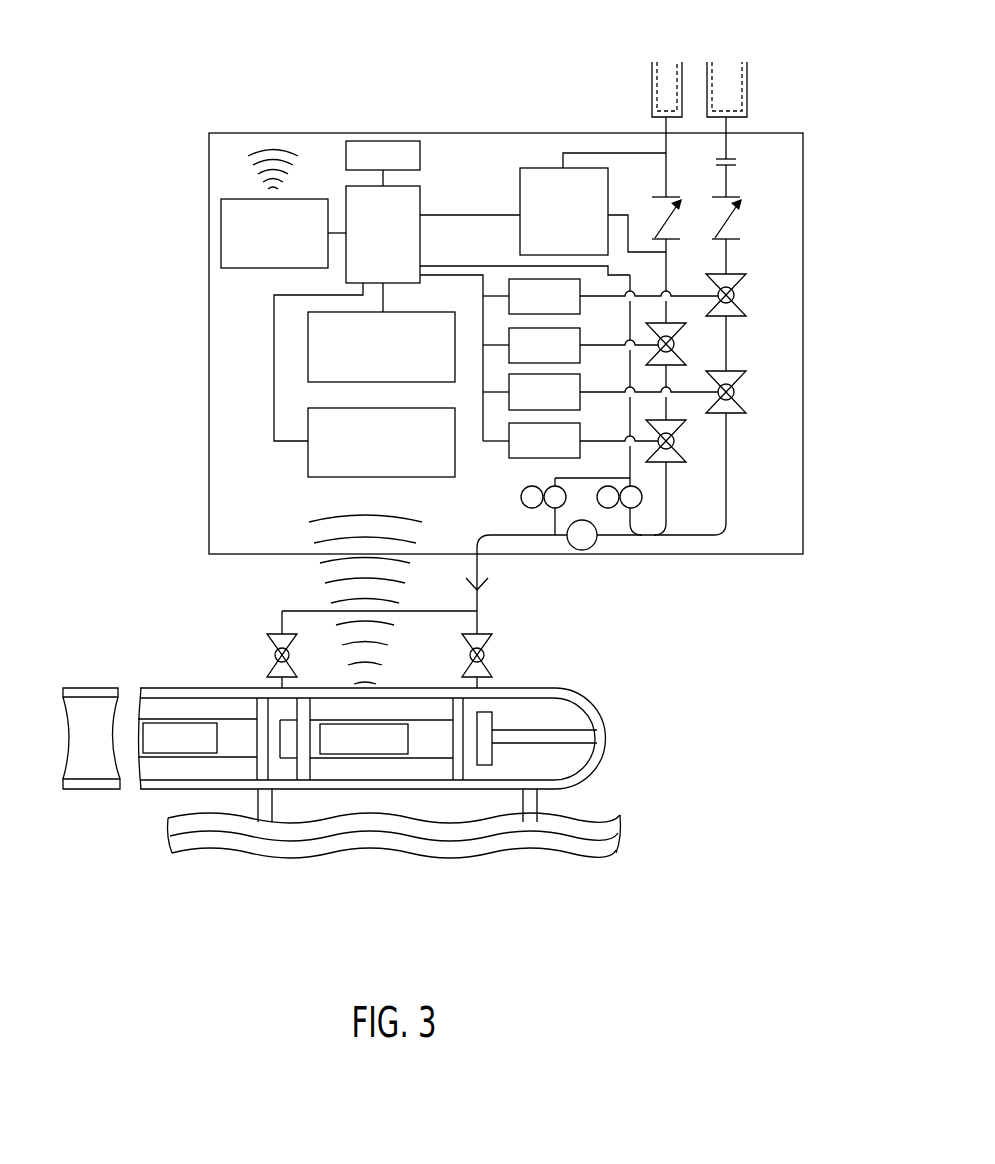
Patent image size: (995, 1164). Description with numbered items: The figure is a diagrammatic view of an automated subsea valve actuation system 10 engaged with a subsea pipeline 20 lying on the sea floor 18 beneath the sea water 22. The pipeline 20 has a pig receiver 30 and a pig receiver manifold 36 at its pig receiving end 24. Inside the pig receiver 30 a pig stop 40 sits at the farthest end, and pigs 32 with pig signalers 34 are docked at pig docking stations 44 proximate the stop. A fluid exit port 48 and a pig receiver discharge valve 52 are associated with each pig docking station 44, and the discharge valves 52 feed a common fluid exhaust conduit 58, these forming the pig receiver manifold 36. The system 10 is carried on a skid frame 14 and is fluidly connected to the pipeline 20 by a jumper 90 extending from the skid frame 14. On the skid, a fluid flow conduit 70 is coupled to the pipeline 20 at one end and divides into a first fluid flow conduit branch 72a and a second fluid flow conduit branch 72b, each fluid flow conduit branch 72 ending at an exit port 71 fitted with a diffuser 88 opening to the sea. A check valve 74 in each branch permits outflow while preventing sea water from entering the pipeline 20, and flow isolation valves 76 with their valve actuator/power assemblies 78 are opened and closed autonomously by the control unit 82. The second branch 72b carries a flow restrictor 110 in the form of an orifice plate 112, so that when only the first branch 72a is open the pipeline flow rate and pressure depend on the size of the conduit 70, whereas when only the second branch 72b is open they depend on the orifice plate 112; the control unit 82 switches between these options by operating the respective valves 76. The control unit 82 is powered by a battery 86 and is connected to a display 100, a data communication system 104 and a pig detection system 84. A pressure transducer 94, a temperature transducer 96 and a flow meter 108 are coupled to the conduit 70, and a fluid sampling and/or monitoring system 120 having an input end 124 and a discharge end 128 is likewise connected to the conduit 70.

The automated subsea valve actuation system 10 is at (289, 90).
The skid frame 14 is at (206, 319).
The sea floor 18 is at (593, 815).
The subsea pipeline 20 is at (87, 687).
The sea water 22 is at (694, 660).
The pig receiving end 24 is at (100, 612).
The pig receiver 30 is at (607, 750).
The pig 32 is at (188, 717).
The pig signaler 34 is at (180, 745).
The pig receiver manifold 36 is at (309, 597).
The pig stop 40 is at (567, 730).
The pig docking station 44 is at (208, 668).
The fluid exit port 48 is at (285, 688).
The pig receiver discharge valve 52 is at (275, 654).
The fluid exhaust conduit 58 is at (480, 603).
The fluid flow conduit 70 is at (488, 540).
The exit port 71 is at (664, 124).
The fluid flow conduit branch 72 is at (677, 373).
The first fluid flow conduit branch 72a is at (669, 488).
The second fluid flow conduit branch 72b is at (731, 328).
The check valve 74 is at (741, 200).
The flow isolation valve 76 is at (734, 293).
The valve actuator/power assembly 78 is at (557, 309).
The control unit 82 is at (420, 188).
The pig detection system 84 is at (308, 462).
The battery 86 is at (308, 350).
The diffuser 88 is at (653, 70).
The jumper 90 is at (478, 552).
The pressure transducer 94 is at (557, 508).
The temperature transducer 96 is at (521, 497).
The display 100 is at (387, 139).
The data communication system 104 is at (222, 200).
The flow meter 108 is at (590, 548).
The flow restrictor 110 is at (736, 149).
The orifice plate 112 is at (737, 163).
The fluid sampling and/or monitoring system 120 is at (545, 160).
The input end 124 is at (618, 209).
The discharge end 128 is at (556, 166).